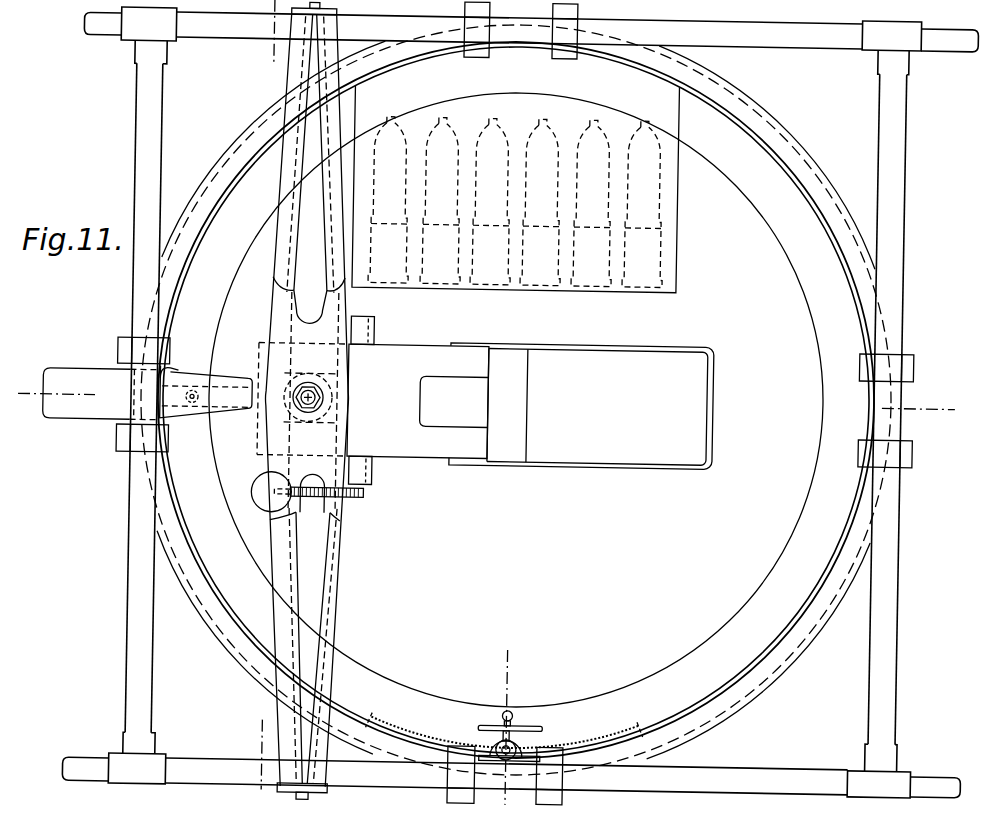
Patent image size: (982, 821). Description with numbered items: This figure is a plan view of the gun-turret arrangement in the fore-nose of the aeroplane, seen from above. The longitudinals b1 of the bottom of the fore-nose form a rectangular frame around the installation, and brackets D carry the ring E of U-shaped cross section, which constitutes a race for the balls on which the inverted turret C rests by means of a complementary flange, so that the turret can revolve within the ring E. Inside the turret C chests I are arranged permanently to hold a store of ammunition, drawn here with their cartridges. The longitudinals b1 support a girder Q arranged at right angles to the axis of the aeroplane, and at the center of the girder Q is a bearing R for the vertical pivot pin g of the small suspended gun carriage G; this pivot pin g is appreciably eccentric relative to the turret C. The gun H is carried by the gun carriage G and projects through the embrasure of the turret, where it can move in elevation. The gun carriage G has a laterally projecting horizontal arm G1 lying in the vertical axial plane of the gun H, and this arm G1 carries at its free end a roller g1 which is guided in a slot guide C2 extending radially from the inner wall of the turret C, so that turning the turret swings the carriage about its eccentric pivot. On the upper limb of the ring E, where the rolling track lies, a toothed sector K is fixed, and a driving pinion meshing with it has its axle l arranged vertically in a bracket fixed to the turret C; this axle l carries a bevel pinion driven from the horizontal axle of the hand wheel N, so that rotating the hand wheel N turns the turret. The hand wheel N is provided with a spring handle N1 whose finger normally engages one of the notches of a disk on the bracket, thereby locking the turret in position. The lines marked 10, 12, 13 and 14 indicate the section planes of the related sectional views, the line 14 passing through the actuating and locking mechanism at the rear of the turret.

The longitudinals b1 is at (804, 777).
The brackets D is at (558, 771).
The ring E is at (787, 663).
The turret C is at (715, 685).
The chests I is at (664, 250).
The gun H is at (88, 388).
The girder Q is at (333, 603).
The gun carriage G is at (310, 323).
The pivot pin g is at (325, 396).
The bearing R is at (328, 415).
The horizontal arm G1 is at (257, 408).
The slot guide C2 is at (182, 388).
The roller g1 is at (194, 408).
The toothed sector K is at (610, 750).
The axle l is at (525, 740).
The hand wheel N is at (517, 722).
The spring handle N1 is at (506, 712).
The section line 10 is at (482, 415).
The section line 12 is at (246, 754).
The section line 13 is at (262, 32).
The section line 14 is at (496, 728).